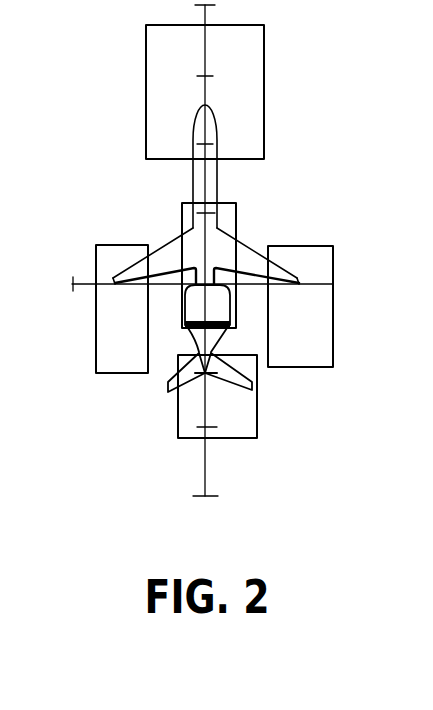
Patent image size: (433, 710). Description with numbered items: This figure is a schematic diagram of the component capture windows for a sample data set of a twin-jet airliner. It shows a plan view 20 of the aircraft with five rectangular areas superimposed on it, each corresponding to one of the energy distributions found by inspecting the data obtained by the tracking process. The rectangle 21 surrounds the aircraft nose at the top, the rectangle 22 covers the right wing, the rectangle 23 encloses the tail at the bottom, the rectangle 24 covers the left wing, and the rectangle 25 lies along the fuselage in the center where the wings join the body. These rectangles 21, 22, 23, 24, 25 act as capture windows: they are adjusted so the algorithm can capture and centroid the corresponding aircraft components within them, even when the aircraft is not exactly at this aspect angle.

The plan view 20 is at (193, 181).
The rectangle 21 is at (264, 87).
The rectangle 22 is at (333, 345).
The rectangle 23 is at (237, 438).
The rectangle 24 is at (96, 352).
The rectangle 25 is at (236, 212).